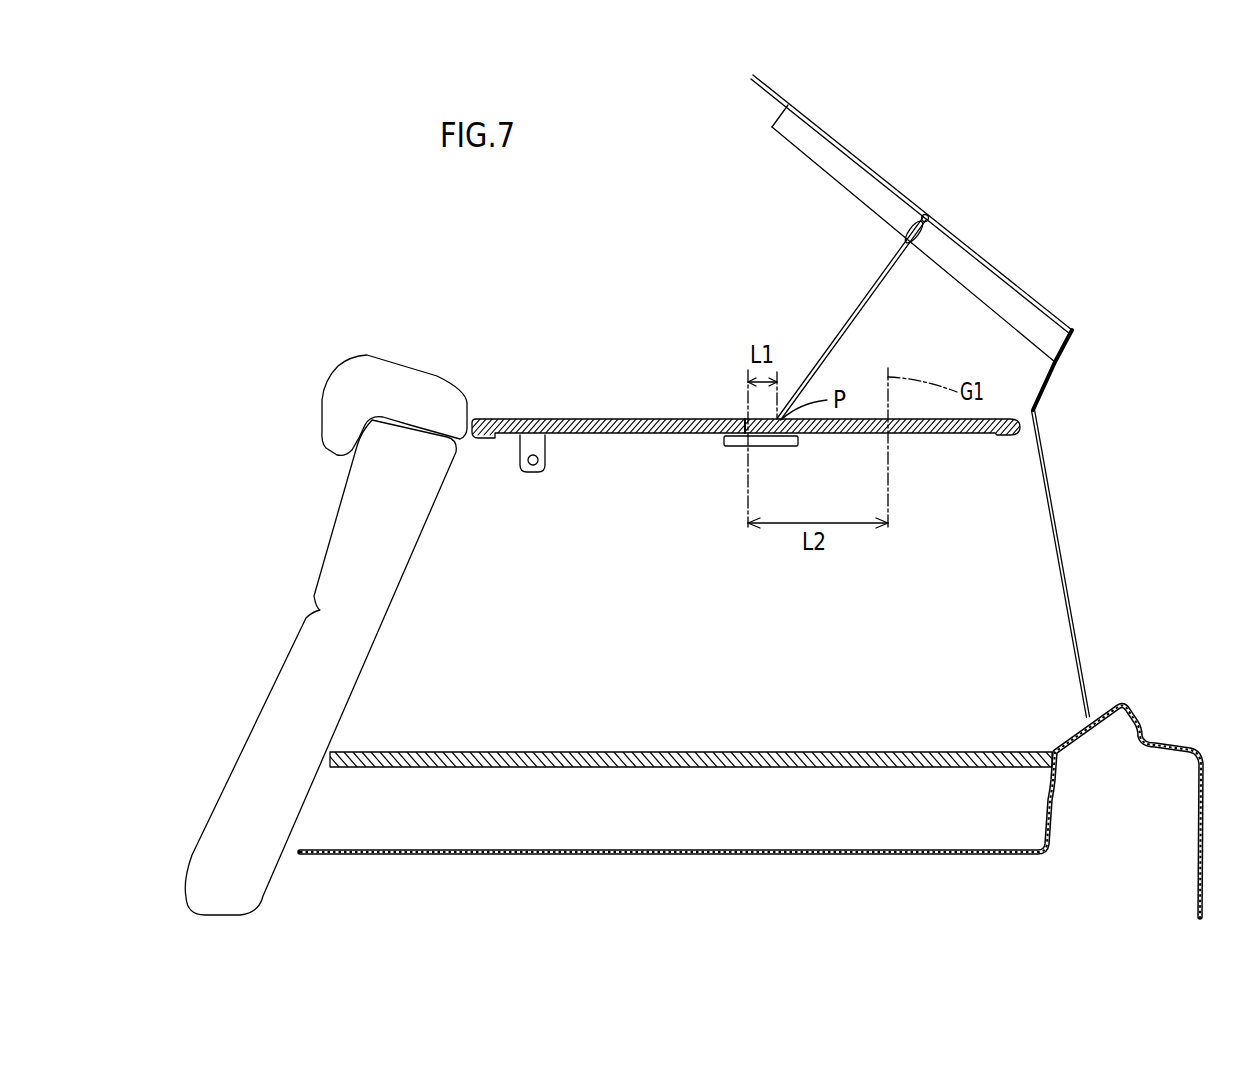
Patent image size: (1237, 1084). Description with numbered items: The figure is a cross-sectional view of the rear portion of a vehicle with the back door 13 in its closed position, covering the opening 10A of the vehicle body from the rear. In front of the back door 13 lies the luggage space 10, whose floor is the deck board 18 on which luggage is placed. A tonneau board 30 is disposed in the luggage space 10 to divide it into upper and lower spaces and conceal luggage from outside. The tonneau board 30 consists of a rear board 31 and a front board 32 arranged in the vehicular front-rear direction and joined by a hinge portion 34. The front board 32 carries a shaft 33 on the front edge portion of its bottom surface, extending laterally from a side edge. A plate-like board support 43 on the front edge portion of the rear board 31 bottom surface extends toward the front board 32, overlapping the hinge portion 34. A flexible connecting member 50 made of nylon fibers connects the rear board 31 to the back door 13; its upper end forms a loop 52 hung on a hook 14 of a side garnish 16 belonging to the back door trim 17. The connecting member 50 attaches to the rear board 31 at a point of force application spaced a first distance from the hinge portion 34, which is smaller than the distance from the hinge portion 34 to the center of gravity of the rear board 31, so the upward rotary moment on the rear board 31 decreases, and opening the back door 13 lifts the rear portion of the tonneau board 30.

The luggage space 10 is at (1025, 612).
The opening 10A is at (1072, 735).
The back door 13 is at (1055, 282).
The hook 14 is at (921, 218).
The side garnish 16 is at (842, 157).
The back door trim 17 is at (1030, 483).
The deck board 18 is at (895, 752).
The tonneau board 30 is at (743, 437).
The rear board 31 is at (947, 437).
The front board 32 is at (607, 437).
The shaft 33 is at (531, 470).
The hinge portion 34 is at (745, 418).
The board support 43 is at (735, 446).
The connecting member 50 is at (864, 322).
The loop 52 is at (918, 230).